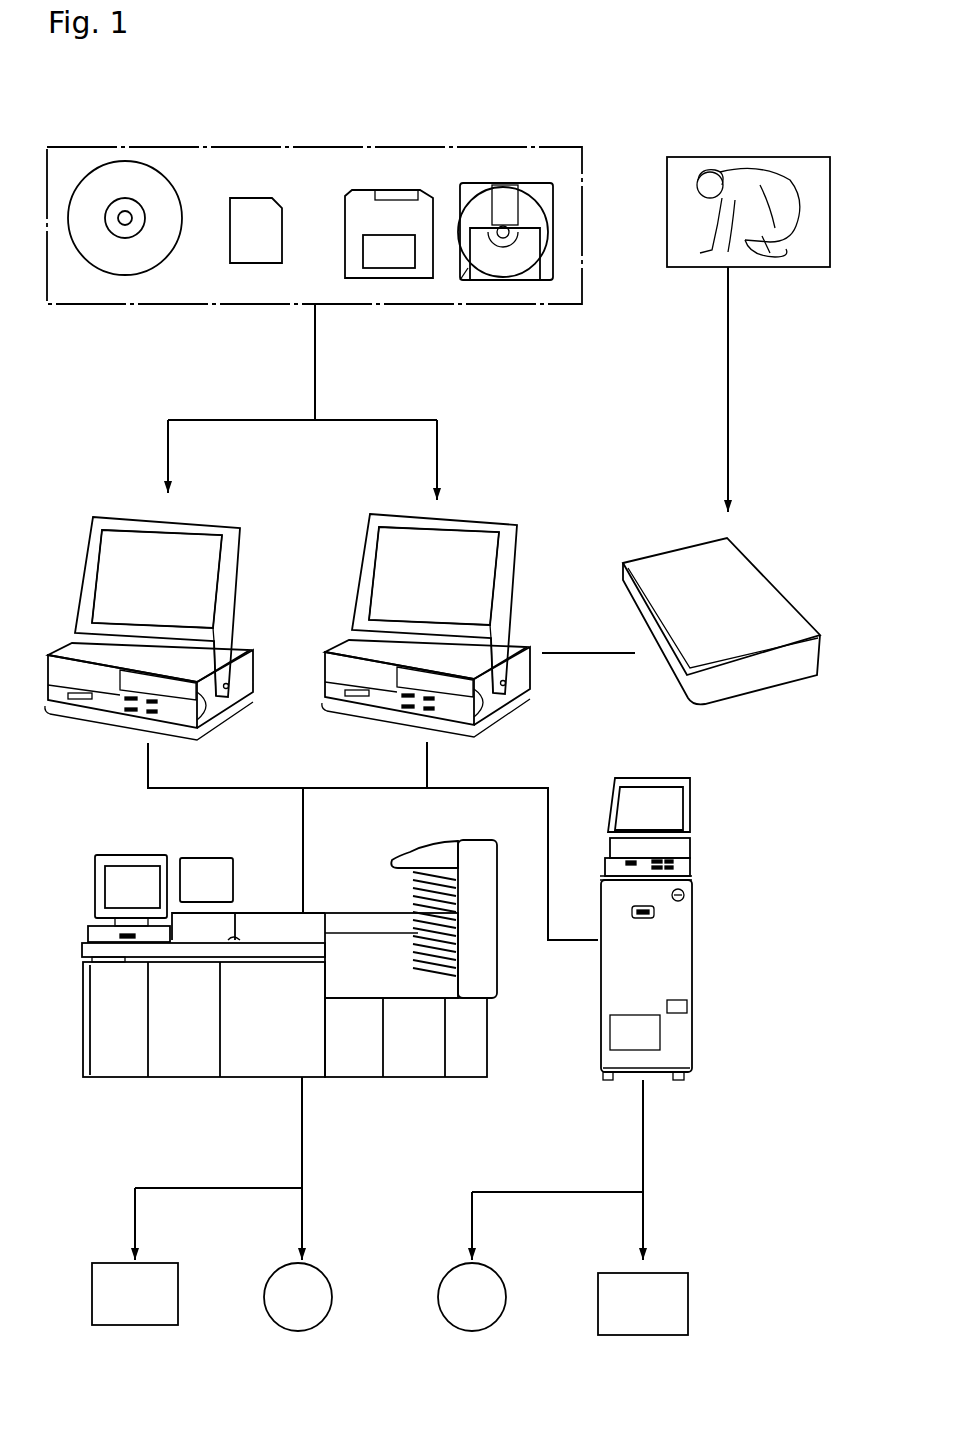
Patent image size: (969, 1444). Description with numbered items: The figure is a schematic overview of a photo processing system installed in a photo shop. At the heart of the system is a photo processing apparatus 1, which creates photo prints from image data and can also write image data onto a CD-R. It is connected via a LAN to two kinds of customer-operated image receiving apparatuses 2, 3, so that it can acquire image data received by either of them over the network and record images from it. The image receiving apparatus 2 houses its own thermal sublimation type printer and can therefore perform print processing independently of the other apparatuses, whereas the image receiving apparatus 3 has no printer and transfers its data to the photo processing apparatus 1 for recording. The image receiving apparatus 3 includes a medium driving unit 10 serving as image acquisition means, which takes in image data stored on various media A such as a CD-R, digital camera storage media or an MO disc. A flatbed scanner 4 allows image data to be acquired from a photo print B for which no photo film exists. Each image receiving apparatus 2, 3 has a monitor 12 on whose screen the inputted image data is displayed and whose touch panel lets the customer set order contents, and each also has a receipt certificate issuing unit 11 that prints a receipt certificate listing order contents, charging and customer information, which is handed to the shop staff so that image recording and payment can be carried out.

The photo processing apparatus 1 is at (75, 863).
The image receiving apparatus 2 is at (713, 832).
The image receiving apparatus 3 is at (108, 493).
The flatbed scanner 4 is at (748, 556).
The medium driving unit 10 is at (150, 713).
The receipt certificate issuing unit 11 is at (85, 700).
The monitor 12 is at (212, 568).
The media A is at (430, 148).
The photo print B is at (778, 150).